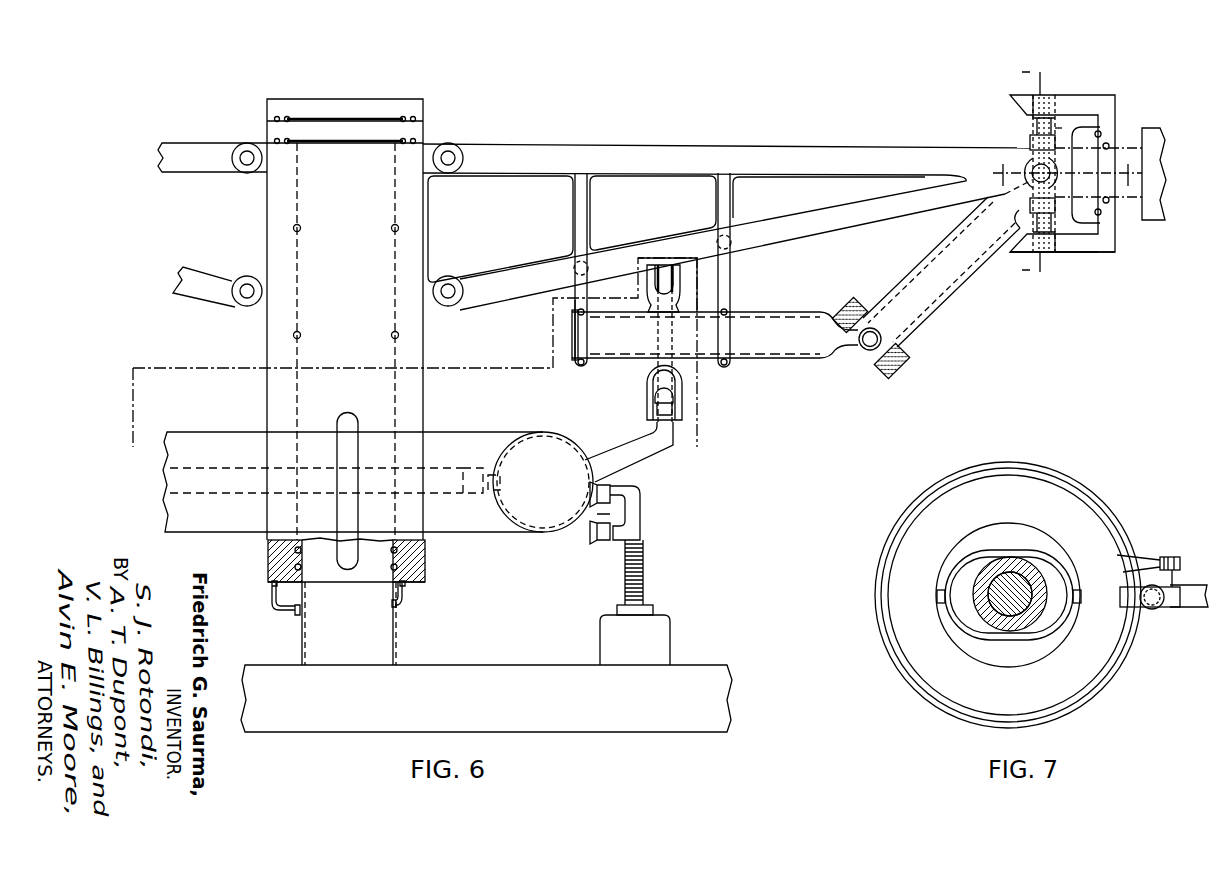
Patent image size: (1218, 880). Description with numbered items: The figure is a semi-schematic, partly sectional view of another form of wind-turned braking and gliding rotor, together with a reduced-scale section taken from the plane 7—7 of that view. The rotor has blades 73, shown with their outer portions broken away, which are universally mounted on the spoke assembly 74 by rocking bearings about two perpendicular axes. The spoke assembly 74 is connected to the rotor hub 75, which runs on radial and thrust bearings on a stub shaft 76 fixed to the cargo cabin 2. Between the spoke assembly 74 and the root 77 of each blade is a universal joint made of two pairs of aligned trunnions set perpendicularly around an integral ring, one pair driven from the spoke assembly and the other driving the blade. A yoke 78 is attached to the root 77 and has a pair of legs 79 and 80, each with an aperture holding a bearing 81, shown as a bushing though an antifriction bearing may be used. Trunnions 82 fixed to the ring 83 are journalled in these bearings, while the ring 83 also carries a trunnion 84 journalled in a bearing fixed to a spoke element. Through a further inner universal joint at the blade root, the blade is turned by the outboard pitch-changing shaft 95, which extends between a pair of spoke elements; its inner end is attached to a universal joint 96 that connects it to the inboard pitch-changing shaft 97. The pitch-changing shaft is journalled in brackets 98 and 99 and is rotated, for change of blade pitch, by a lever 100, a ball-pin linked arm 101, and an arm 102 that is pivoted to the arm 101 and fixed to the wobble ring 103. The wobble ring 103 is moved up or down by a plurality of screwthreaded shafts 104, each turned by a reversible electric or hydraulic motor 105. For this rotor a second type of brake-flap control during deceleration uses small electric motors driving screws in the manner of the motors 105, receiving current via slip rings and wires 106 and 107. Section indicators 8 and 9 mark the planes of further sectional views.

In FIG. 6, the cargo cabin 2 is at (490, 665).
In FIG. 6, the sectional plane 7— 7 is at (415, 369).
In FIG. 6, the section line 8- 8 is at (1021, 171).
In FIG. 6, the section line 9- 9 is at (1065, 166).
In FIG. 6, the blades 73 is at (1153, 128).
In FIG. 6, the spoke assembly 74 is at (806, 148).
In FIG. 6, the rotor hub 75 is at (421, 223).
In FIG. 6, the stub shaft 76 is at (346, 623).
In FIG. 6, the root 77 is at (1122, 145).
In FIG. 6, the yoke 78 is at (1112, 229).
In FIG. 6, the leg 79 is at (1088, 96).
In FIG. 6, the leg 80 is at (1088, 252).
In FIG. 6, the bearing 81 is at (1050, 253).
In FIG. 6, the trunnions 82 is at (1033, 121).
In FIG. 6, the ring 83 is at (1051, 131).
In FIG. 6, the trunnion 84 is at (1034, 165).
In FIG. 6, the outboard pitch-changing shaft 95 is at (958, 288).
In FIG. 6, the universal joint 96 is at (868, 362).
In FIG. 6, the inboard pitch-changing shaft 97 is at (762, 361).
In FIG. 7, the inboard pitch-changing shaft 97 is at (1172, 609).
In FIG. 6, the bracket 98 is at (700, 284).
In FIG. 6, the bracket 99 is at (588, 292).
In FIG. 6, the lever 100 is at (680, 293).
In FIG. 7, the lever 100 is at (1180, 571).
In FIG. 6, the ball-pin linked arm 101 is at (647, 378).
In FIG. 6, the arm 102 is at (626, 446).
In FIG. 6, the wobble ring 103 is at (463, 431).
In FIG. 6, the screwthreaded shaft 104 is at (644, 549).
In FIG. 6, the motor 105 is at (635, 640).
In FIG. 6, the slip rings and wires 106 is at (430, 547).
In FIG. 6, the slip rings and wires 107 is at (426, 572).